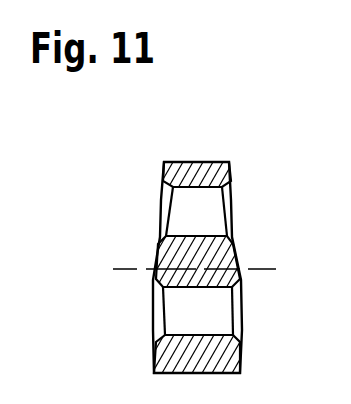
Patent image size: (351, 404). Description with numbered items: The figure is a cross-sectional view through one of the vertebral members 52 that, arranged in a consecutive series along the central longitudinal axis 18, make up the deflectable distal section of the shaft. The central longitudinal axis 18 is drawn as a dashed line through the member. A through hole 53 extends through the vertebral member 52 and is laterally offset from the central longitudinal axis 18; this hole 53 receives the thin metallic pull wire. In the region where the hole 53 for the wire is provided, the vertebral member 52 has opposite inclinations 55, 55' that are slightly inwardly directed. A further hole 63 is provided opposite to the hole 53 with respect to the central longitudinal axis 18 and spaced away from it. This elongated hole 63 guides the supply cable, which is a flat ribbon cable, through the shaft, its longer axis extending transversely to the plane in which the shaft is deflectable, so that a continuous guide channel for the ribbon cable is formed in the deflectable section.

The vertebral member 52 is at (220, 124).
The inclination 55 is at (130, 209).
The inclination 55' is at (267, 207).
The through hole 53 is at (185, 222).
The hole 63 is at (207, 318).
The central longitudinal axis 18 is at (117, 270).